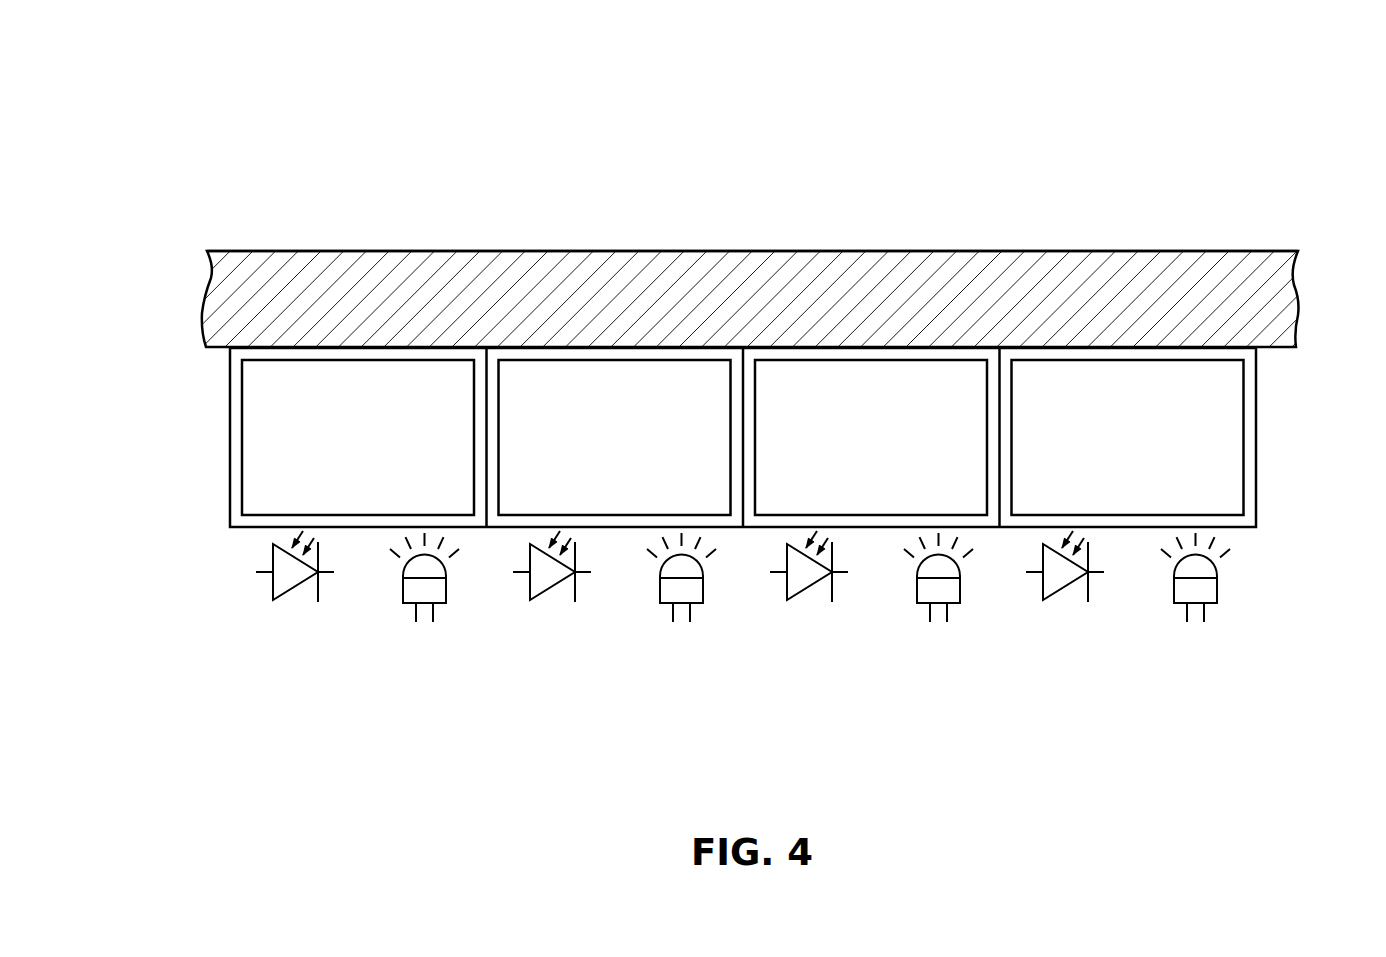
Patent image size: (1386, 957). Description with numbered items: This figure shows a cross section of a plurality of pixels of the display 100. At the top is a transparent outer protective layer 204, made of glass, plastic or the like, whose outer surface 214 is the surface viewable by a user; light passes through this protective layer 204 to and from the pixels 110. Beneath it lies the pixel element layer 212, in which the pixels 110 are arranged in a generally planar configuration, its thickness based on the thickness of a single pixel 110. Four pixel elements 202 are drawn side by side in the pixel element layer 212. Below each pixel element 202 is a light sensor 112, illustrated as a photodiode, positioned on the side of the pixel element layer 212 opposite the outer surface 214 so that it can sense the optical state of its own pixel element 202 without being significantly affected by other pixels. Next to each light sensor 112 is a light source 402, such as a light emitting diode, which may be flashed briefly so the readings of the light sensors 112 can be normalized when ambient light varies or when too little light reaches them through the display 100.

The display 100 is at (163, 80).
The transparent outer protective layer 204 is at (818, 250).
The outer surface 214 is at (687, 231).
The pixel element layer 212 is at (1292, 438).
The pixel element 202 is at (422, 391).
The pixel 110 is at (646, 572).
The light sensor 112 is at (718, 549).
The light source 402 is at (827, 577).